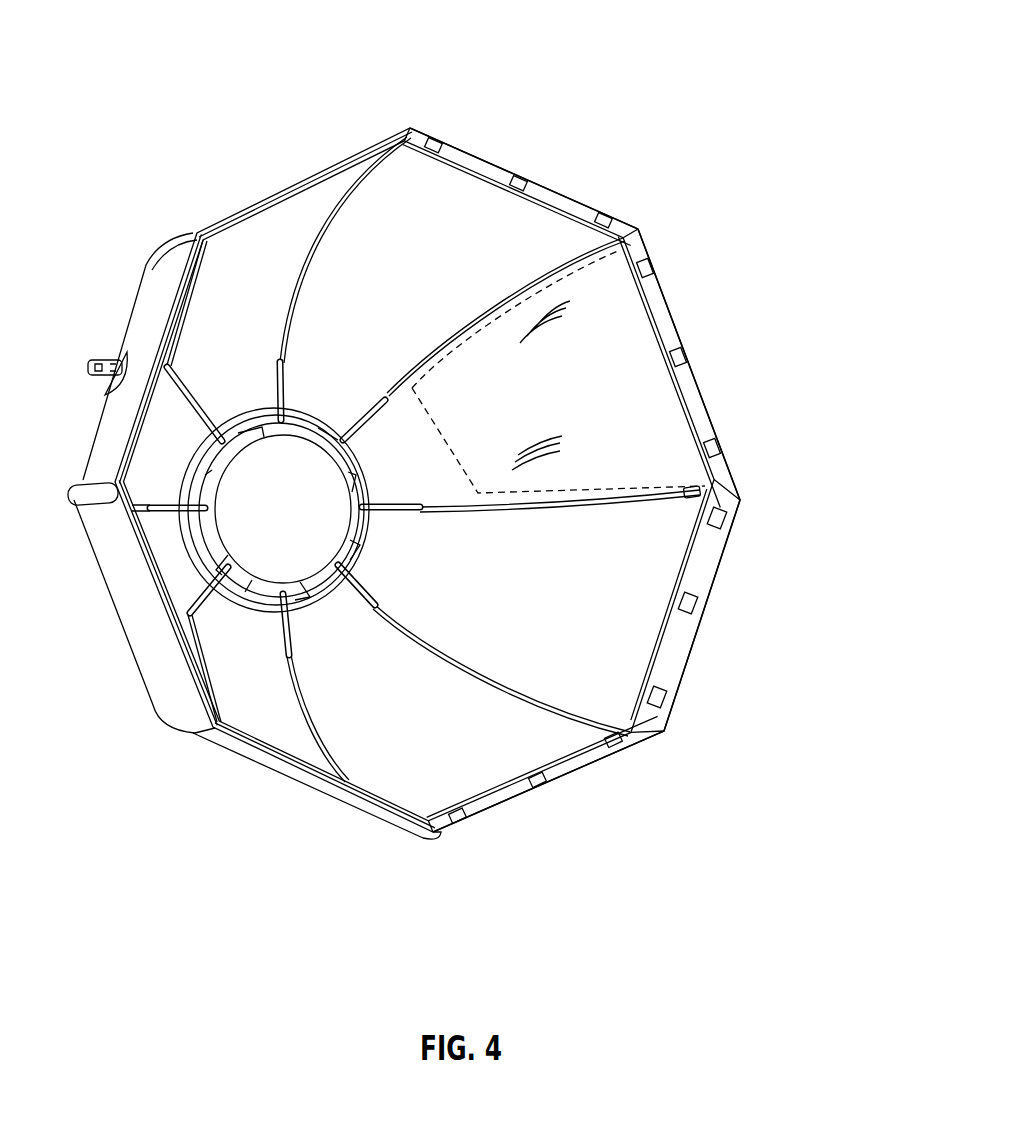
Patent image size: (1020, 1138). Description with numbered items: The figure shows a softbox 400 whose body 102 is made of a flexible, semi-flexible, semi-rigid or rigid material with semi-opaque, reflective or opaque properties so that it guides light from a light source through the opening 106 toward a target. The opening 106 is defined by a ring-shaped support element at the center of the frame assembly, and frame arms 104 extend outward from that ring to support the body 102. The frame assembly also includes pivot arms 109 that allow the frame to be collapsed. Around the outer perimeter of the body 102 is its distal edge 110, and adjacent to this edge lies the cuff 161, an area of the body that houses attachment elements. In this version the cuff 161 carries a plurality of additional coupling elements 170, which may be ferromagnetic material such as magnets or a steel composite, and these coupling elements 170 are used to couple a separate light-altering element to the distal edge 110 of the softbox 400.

The softbox 400 is at (140, 45).
The body 102 is at (239, 245).
The frame arms 104 is at (346, 214).
The opening 106 is at (302, 522).
The pivot arms 109 is at (280, 360).
The distal edge 110 is at (827, 496).
The cuff 161 is at (553, 198).
The coupling elements 170 is at (438, 138).